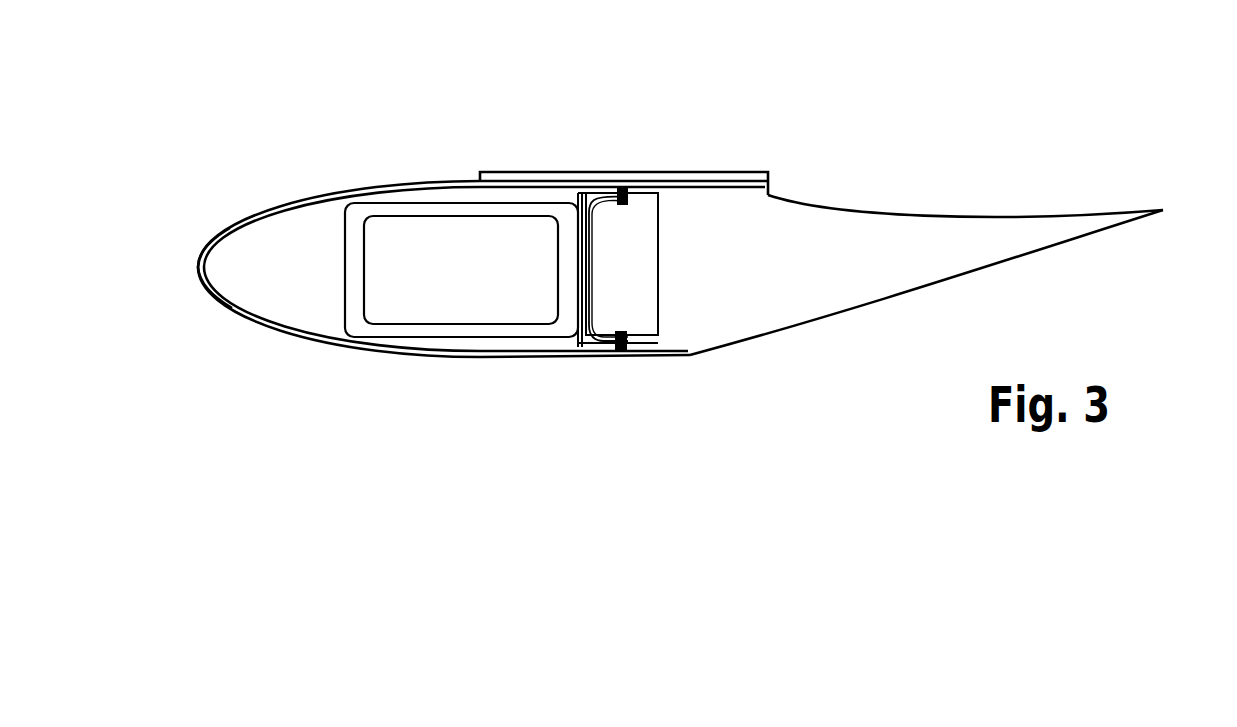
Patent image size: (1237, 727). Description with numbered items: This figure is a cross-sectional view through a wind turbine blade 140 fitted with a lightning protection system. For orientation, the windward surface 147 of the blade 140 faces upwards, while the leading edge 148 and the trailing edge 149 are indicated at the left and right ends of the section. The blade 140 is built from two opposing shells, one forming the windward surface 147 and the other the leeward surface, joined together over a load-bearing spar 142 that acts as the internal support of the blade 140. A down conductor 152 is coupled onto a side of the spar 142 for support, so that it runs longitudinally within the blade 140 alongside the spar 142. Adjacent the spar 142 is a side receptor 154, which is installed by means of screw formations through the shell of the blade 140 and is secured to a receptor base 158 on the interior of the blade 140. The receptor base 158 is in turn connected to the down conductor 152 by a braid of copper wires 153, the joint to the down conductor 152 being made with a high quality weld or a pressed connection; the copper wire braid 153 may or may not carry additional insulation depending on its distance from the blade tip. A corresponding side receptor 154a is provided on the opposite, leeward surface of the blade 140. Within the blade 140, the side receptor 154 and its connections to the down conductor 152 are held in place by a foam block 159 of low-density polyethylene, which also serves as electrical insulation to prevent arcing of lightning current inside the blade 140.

The blade 140 is at (322, 122).
The spar 142 is at (357, 327).
The windward surface 147 is at (920, 217).
The leading edge 148 is at (199, 268).
The trailing edge 149 is at (1165, 211).
The down conductor 152 is at (586, 270).
The copper wire braid 153 is at (586, 223).
The side receptor 154 is at (628, 205).
The corresponding side receptor 154a is at (620, 351).
The receptor base 158 is at (623, 204).
The foam block 159 is at (637, 307).